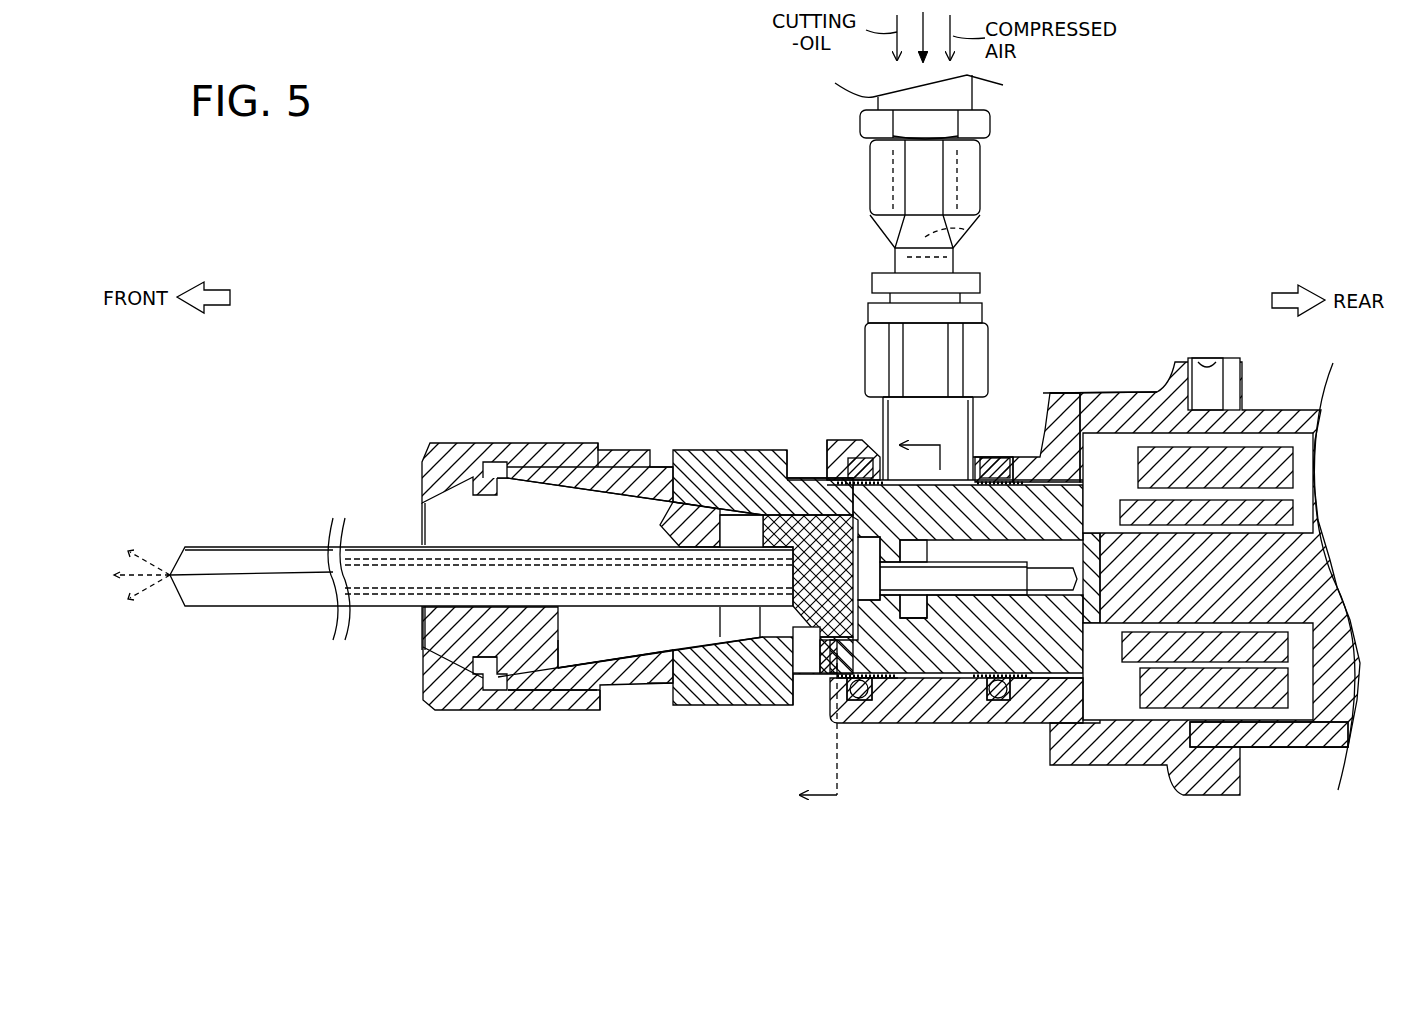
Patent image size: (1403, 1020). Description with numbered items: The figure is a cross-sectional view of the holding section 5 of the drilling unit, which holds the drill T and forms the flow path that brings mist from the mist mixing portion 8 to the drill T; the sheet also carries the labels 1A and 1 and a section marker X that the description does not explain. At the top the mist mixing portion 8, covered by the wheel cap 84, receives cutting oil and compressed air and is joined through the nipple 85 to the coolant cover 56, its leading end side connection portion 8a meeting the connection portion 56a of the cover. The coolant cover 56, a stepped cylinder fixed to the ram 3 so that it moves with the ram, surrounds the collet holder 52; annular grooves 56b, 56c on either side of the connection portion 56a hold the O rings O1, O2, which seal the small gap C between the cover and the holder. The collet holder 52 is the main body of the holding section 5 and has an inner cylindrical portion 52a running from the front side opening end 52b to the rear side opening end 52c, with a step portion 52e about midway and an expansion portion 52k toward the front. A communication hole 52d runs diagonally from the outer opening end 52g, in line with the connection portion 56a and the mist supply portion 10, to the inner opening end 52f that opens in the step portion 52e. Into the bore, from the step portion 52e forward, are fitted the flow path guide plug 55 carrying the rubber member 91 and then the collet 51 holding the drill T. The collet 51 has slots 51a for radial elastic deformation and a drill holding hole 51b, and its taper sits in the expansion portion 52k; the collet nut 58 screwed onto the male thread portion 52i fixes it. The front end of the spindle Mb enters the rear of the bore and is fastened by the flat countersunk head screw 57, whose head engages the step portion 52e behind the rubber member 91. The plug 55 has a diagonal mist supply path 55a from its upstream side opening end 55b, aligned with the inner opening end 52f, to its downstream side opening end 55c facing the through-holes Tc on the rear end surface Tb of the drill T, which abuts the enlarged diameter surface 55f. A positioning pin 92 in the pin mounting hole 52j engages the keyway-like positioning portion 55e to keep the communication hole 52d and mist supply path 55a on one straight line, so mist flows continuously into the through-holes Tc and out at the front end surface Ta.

The machine tool 1A is at (597, 128).
The machine tool 1 is at (451, 135).
The mist supply portion 10 is at (827, 242).
The holding section 5 is at (548, 437).
The collet nut 58 is at (452, 452).
The collet 51 is at (462, 712).
The slots 51a is at (560, 640).
The drill holding hole 51b is at (602, 548).
The flow path guide plug 55 is at (746, 457).
The mist supply path 55a is at (776, 455).
The upstream side opening end 55b is at (815, 482).
The downstream side opening end 55c is at (731, 456).
The positioning portion 55e is at (790, 707).
The enlarged diameter surface 55f is at (753, 610).
The collet holder 52 is at (623, 692).
The inner cylindrical portion 52a is at (715, 630).
The front side opening end 52b is at (520, 652).
The rear side opening end 52c is at (1098, 605).
The communication hole 52d is at (842, 442).
The step portion 52e is at (903, 700).
The inner opening end 52f is at (826, 480).
The outer opening end 52g is at (995, 465).
The male thread portion 52i is at (573, 702).
The pin mounting hole 52j is at (830, 702).
The expansion portion 52k is at (632, 674).
The coolant cover 56 is at (1205, 797).
The connection portion 56a is at (980, 473).
The annular groove 56b is at (875, 702).
The annular groove 56c is at (1020, 705).
The flat countersunk head screw 57 is at (958, 598).
The rubber member 91 is at (913, 620).
The positioning pin 92 is at (807, 660).
The wheel cap 84 is at (870, 180).
The nipple 85 is at (990, 337).
The mist mixing portion 8 is at (967, 230).
The leading end side connection portion 8a is at (860, 440).
The ram 3 is at (1275, 410).
The drill T is at (265, 607).
The front end surface Ta is at (180, 604).
The rear end surface Tb is at (790, 607).
The through-holes Tc is at (385, 562).
The small gap C is at (940, 702).
The spindle Mb is at (1300, 583).
The O ring O1 is at (858, 702).
The O ring O2 is at (997, 702).
The section line X is at (872, 621).